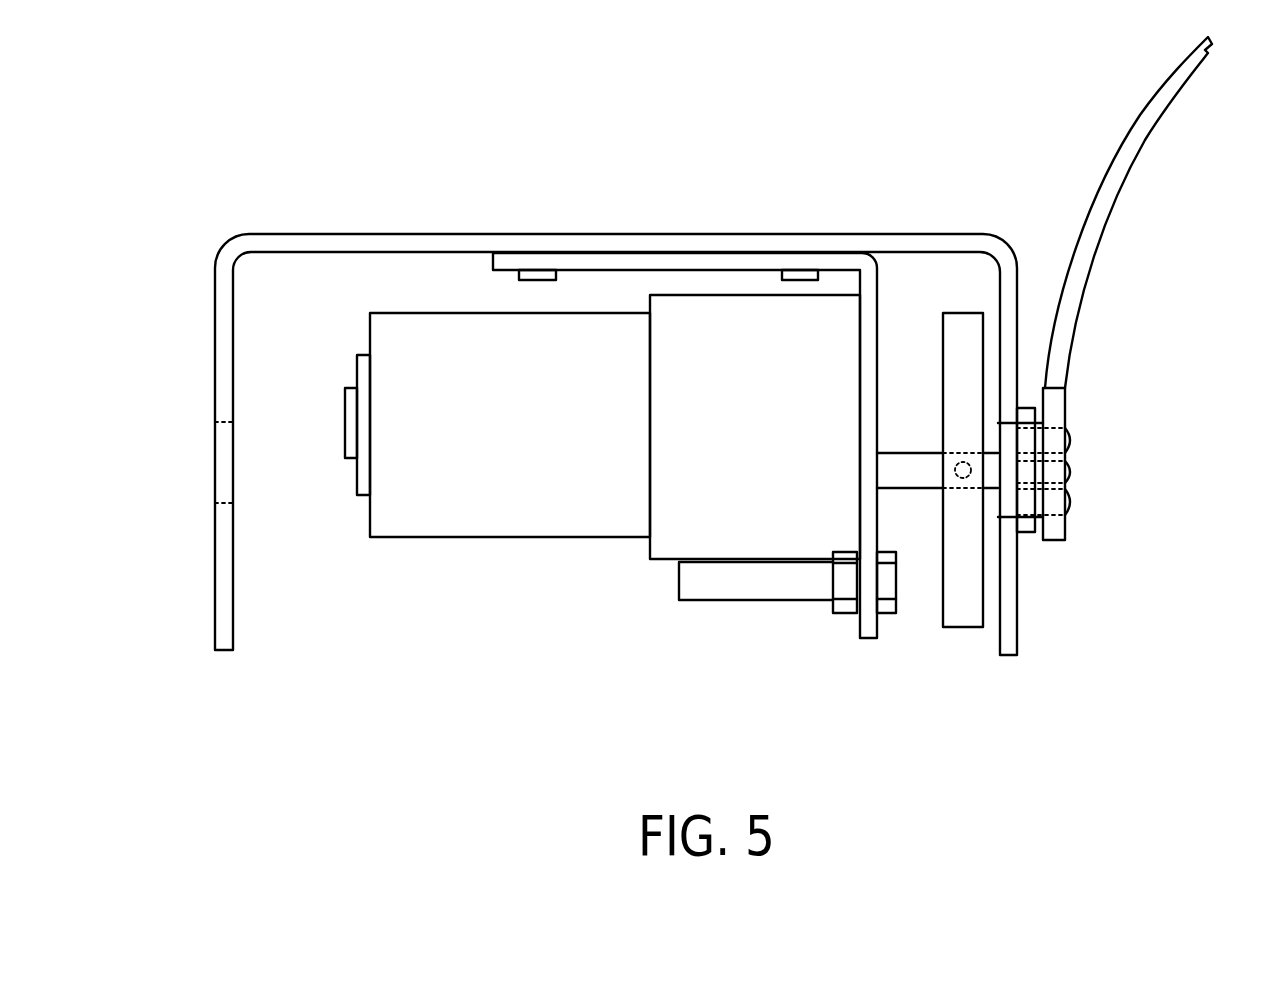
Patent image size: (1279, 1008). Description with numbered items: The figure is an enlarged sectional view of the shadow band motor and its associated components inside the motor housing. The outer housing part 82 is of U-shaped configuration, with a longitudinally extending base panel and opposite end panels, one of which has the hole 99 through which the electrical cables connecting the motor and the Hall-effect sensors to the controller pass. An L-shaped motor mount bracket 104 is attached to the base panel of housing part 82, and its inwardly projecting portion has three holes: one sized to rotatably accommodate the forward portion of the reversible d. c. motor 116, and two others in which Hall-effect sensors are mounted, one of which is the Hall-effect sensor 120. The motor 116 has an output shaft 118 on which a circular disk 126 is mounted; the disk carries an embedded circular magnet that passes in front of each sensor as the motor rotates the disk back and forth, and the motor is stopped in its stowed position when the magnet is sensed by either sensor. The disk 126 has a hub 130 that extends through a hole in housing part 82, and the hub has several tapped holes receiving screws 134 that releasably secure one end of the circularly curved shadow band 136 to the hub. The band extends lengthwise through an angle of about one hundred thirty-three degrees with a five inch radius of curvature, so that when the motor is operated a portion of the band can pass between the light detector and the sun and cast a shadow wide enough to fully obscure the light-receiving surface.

The housing part 82 is at (641, 233).
The hole 99 is at (215, 420).
The motor mount bracket 104 is at (492, 262).
The d. c. motor 116 is at (566, 537).
The output shaft 118 is at (912, 452).
The Hall-effect sensor 120 is at (747, 602).
The circular disk 126 is at (961, 313).
The hub 130 is at (1025, 408).
The screws 134 is at (1071, 497).
The shadow band 136 is at (1124, 188).